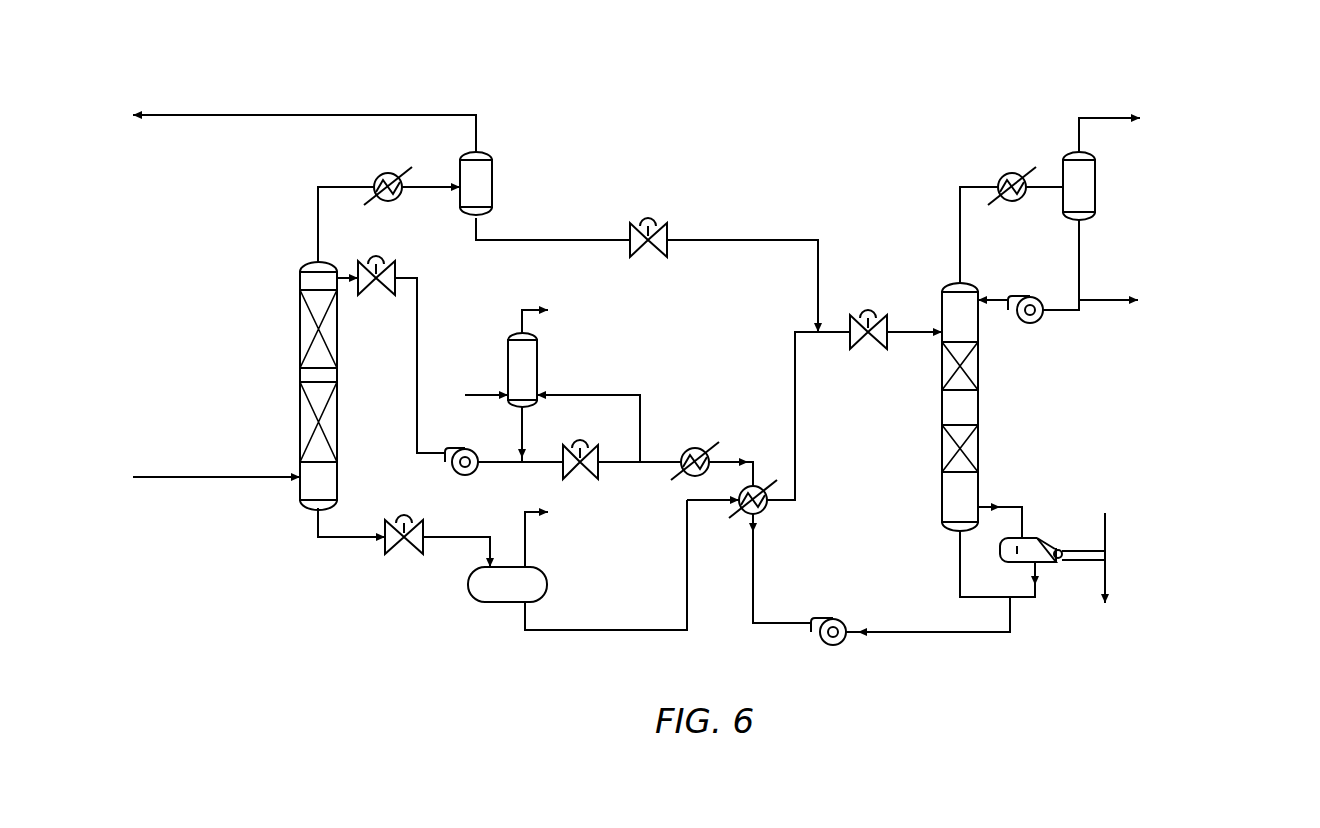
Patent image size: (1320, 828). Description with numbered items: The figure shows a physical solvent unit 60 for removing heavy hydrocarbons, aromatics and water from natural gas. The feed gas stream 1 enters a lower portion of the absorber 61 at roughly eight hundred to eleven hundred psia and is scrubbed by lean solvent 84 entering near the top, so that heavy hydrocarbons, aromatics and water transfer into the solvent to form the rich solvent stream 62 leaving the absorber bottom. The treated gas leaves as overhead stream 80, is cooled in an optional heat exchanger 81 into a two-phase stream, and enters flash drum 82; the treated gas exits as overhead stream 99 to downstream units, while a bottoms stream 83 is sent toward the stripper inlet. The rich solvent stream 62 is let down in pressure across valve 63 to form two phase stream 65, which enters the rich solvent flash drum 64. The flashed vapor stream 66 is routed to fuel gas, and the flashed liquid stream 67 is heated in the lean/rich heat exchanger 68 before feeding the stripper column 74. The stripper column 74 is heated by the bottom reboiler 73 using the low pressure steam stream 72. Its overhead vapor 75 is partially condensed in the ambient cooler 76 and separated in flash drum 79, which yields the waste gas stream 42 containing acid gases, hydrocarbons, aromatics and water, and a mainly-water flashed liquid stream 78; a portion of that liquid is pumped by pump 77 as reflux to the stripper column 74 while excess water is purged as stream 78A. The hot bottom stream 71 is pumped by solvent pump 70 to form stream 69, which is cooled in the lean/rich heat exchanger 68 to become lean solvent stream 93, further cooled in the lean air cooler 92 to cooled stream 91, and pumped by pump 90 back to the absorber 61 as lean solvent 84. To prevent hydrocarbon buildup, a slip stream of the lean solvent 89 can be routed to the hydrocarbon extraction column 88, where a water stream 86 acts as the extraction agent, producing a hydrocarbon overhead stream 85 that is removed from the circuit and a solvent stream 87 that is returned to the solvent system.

The physical solvent unit 60 is at (1045, 20).
The feed gas stream 1 is at (175, 479).
The absorber 61 is at (340, 478).
The rich solvent stream 62 is at (326, 540).
The valve 63 is at (405, 550).
The rich solvent flash drum 64 is at (548, 585).
The two phase stream 65 is at (450, 540).
The flashed vapor stream 66 is at (526, 512).
The flashed liquid stream 67 is at (612, 631).
The lean/rich heat exchanger 68 is at (765, 513).
The stream 69 is at (752, 625).
The solvent pump 70 is at (843, 646).
The bottom stream 71 is at (935, 633).
The low pressure steam stream 72 is at (1108, 535).
The bottom reboiler 73 is at (1034, 538).
The stripper column 74 is at (980, 428).
The overhead vapor 75 is at (962, 187).
The ambient cooler 76 is at (1005, 173).
The pump 77 is at (1028, 325).
The flashed liquid stream 78 is at (1081, 314).
The water purge stream 78A is at (1100, 299).
The flash drum 79 is at (1098, 179).
The waste gas stream 42 is at (1079, 118).
The overhead stream 80 is at (318, 187).
The heat exchanger 81 is at (378, 176).
The flash drum 82 is at (495, 164).
The bottoms stream 83 is at (535, 240).
The lean solvent 84 is at (420, 302).
The hydrocarbon overhead stream 85 is at (522, 307).
The water stream 86 is at (470, 393).
The solvent stream 87 is at (520, 421).
The hydrocarbon extraction column 88 is at (540, 347).
The slip stream of the lean solvent 89 is at (620, 395).
The pump 90 is at (463, 476).
The cooled stream 91 is at (503, 466).
The lean air cooler 92 is at (692, 447).
The lean solvent stream 93 is at (738, 458).
The overhead stream 99 is at (313, 115).